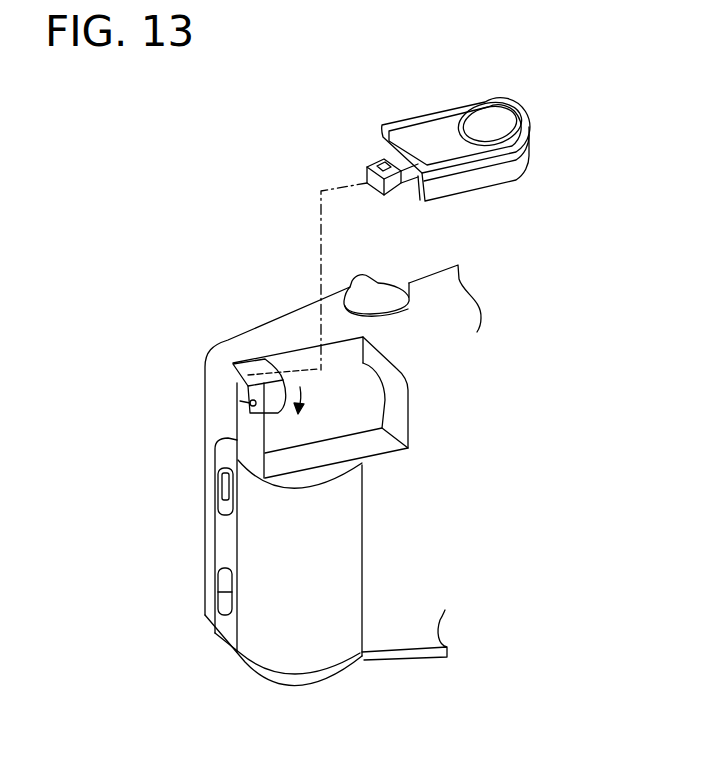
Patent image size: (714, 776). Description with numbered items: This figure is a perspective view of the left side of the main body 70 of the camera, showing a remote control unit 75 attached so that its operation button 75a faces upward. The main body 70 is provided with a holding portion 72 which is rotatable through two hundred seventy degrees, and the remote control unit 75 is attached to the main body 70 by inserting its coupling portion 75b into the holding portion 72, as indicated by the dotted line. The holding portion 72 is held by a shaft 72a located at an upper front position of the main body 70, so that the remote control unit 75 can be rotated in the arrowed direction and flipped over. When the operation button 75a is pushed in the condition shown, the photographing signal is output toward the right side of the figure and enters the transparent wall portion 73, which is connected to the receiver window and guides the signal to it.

The main body 70 is at (205, 461).
The holding portion 72 is at (267, 368).
The shaft 72a is at (240, 401).
The transparent wall portion 73 is at (398, 398).
The remote control unit 75 is at (483, 193).
The operation button 75a is at (497, 113).
The coupling portion 75b is at (370, 162).